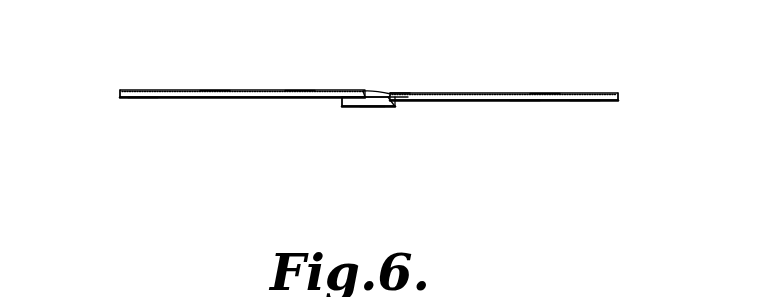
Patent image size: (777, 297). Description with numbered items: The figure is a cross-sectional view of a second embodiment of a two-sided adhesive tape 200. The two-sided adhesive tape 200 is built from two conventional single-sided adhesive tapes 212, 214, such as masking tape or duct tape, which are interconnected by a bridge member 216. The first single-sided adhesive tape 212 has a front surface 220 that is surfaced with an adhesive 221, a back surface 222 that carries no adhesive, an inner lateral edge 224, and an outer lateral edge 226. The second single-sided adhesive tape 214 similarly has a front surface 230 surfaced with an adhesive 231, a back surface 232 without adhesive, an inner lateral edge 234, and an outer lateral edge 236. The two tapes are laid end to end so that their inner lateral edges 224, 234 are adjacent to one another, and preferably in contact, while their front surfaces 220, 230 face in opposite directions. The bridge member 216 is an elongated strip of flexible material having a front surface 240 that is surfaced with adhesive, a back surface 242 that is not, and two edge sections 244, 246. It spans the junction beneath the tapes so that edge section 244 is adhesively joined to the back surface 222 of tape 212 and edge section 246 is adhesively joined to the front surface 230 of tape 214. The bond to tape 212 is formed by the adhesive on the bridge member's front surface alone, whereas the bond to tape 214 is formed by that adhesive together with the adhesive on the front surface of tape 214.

The two-sided adhesive tape 200 is at (372, 126).
The single-sided adhesive tape 212 is at (240, 102).
The single-sided adhesive tape 214 is at (493, 89).
The bridge member 216 is at (352, 109).
The front surface 220 is at (215, 89).
The adhesive 221 is at (300, 90).
The back surface 222 is at (143, 100).
The inner lateral edge 224 is at (363, 92).
The outer lateral edge 226 is at (119, 92).
The front surface 230 is at (585, 103).
The adhesive 231 is at (525, 103).
The back surface 232 is at (546, 92).
The inner lateral edge 234 is at (392, 93).
The outer lateral edge 236 is at (618, 93).
The front surface 240 is at (400, 96).
The back surface 242 is at (375, 108).
The edge section 244 is at (342, 106).
The edge section 246 is at (400, 104).